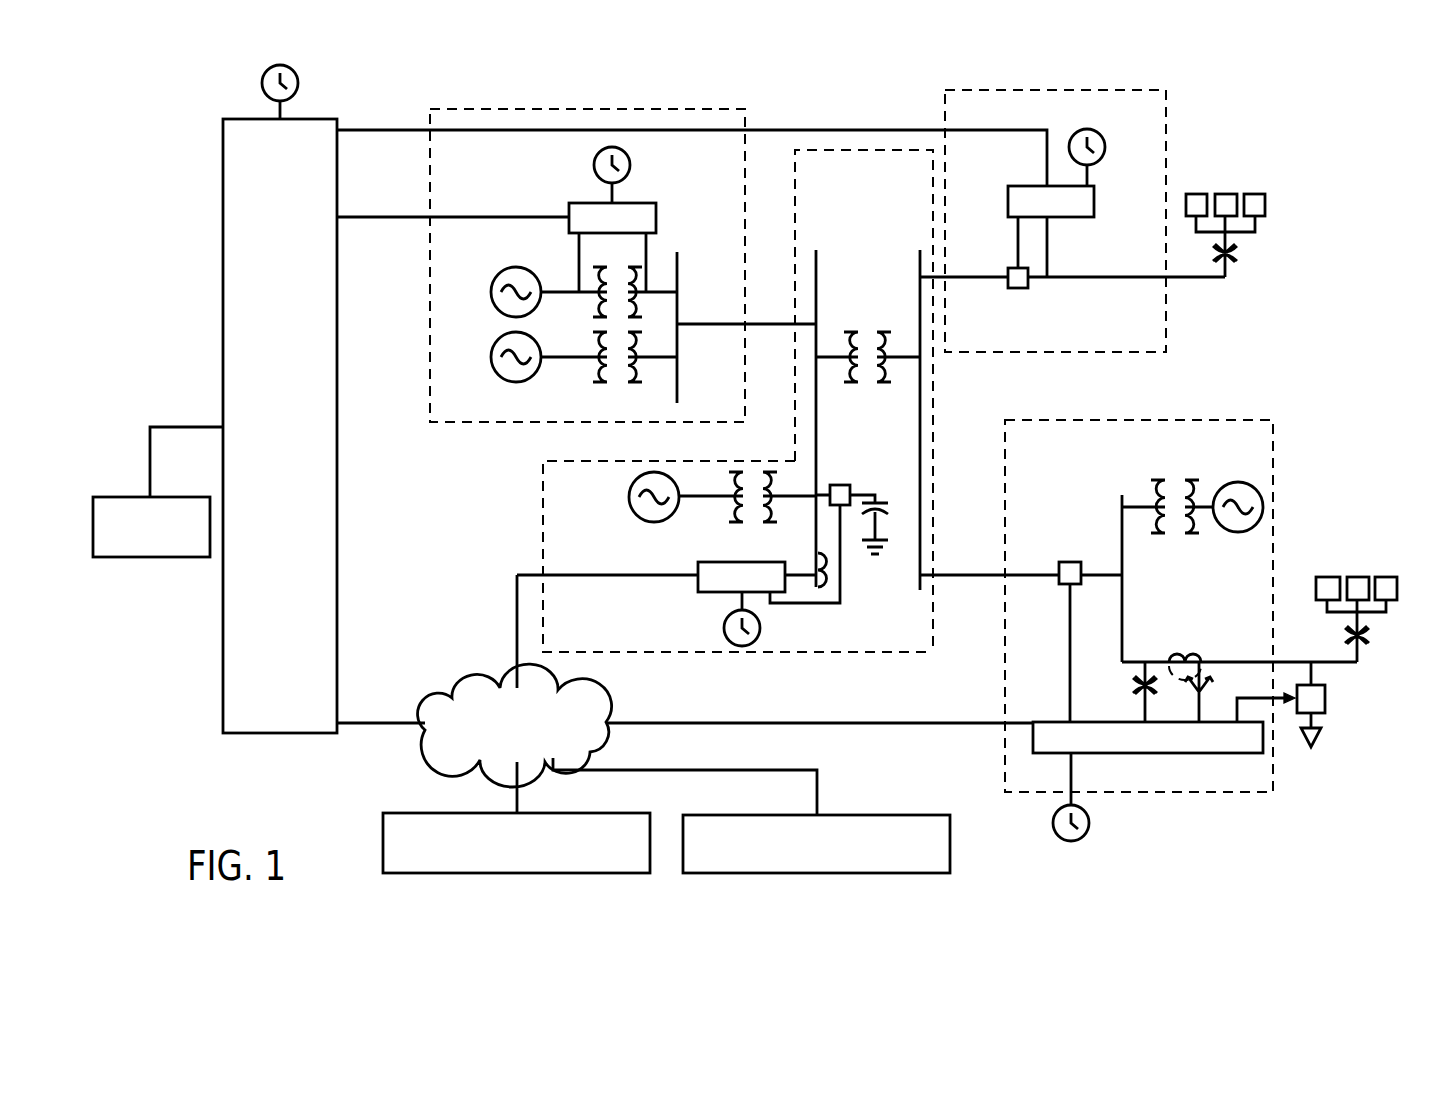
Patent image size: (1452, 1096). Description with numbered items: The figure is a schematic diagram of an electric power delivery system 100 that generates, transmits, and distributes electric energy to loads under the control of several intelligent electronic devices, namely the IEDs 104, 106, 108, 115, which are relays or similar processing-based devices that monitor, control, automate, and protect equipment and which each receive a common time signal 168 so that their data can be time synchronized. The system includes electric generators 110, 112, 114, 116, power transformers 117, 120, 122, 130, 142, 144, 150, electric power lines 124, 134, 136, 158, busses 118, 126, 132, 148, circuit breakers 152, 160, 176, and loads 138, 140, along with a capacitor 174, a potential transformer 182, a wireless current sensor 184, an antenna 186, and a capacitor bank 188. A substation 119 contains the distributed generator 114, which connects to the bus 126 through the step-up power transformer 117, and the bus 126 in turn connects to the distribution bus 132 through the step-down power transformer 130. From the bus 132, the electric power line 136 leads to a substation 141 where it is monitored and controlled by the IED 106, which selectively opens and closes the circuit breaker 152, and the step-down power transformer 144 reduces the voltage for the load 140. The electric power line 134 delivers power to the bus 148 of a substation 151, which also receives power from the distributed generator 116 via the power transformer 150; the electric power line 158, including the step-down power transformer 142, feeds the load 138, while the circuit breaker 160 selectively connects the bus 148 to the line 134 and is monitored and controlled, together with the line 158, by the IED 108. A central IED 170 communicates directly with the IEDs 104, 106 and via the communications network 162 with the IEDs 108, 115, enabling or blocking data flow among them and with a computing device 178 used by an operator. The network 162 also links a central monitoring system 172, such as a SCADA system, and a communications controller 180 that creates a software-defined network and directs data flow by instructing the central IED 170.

The electric power delivery system 100 is at (1270, 128).
The intelligent electronic device 104 is at (578, 203).
The intelligent electronic device 106 is at (1023, 186).
The intelligent electronic device 108 is at (1145, 754).
The electric generator 110 is at (504, 275).
The electric generator 112 is at (504, 340).
The electric generator 114 is at (629, 498).
The intelligent electronic device 115 is at (740, 562).
The electric generator 116 is at (1237, 533).
The power transformer 117 is at (733, 513).
The bus 118 is at (679, 397).
The substation 119 is at (618, 653).
The power transformer 120 is at (594, 306).
The power transformer 122 is at (617, 386).
The electric power line 124 is at (757, 326).
The bus 126 is at (818, 384).
The power transformer 130 is at (868, 336).
The bus 132 is at (918, 561).
The electric power line 134 is at (1020, 578).
The electric power line 136 is at (998, 282).
The load 138 is at (1356, 576).
The load 140 is at (1267, 207).
The substation 141 is at (1140, 353).
The power transformer 142 is at (1370, 642).
The power transformer 144 is at (1238, 255).
The bus 148 is at (1120, 496).
The power transformer 150 is at (1176, 486).
The substation 151 is at (1213, 793).
The circuit breaker 152 is at (1025, 290).
The electric power line 158 is at (1340, 664).
The circuit breaker 160 is at (1070, 562).
The communications network 162 is at (480, 690).
The common time signal 168 is at (298, 83).
The central IED 170 is at (338, 427).
The central monitoring system 172 is at (425, 813).
The capacitor 174 is at (880, 500).
The circuit breaker 176 is at (841, 483).
The computing device 178 is at (170, 558).
The communications controller 180 is at (722, 815).
The potential transformer 182 is at (1133, 685).
The wireless current sensor 184 is at (1178, 655).
The antenna 186 is at (1215, 688).
The capacitor bank 188 is at (1326, 700).